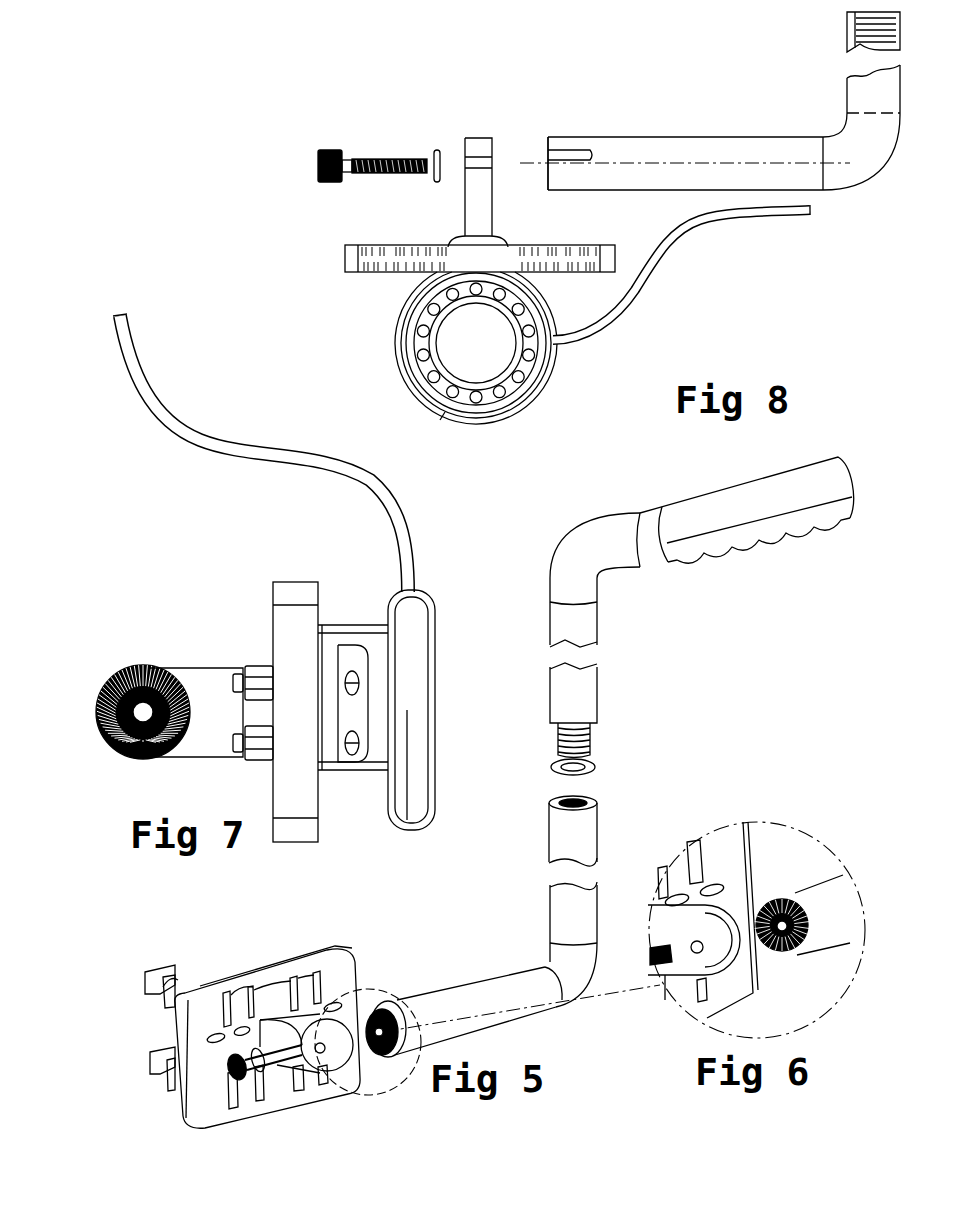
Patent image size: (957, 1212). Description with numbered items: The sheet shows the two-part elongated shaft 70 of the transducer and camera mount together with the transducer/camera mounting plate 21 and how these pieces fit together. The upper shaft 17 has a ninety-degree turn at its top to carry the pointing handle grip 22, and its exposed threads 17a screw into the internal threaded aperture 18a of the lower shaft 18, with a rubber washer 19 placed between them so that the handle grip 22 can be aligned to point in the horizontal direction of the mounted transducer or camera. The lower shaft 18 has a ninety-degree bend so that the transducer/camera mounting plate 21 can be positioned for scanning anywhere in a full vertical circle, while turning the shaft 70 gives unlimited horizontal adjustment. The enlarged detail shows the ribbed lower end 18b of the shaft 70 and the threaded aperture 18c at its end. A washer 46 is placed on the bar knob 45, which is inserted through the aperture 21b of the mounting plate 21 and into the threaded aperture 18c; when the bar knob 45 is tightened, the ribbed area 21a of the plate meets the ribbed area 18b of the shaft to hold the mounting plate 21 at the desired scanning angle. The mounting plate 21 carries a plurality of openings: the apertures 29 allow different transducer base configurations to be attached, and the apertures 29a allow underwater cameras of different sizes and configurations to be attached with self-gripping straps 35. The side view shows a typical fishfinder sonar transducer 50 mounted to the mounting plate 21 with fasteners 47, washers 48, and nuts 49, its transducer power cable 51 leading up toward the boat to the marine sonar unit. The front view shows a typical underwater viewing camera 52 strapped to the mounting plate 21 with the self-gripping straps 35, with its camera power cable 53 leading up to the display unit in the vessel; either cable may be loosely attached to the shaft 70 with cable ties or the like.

In FIG. 5, the upper shaft 17 is at (547, 632).
In FIG. 5, the exposed threads 17a is at (557, 738).
In FIG. 8, the lower shaft 18 is at (847, 32).
In FIG. 5, the lower shaft 18 is at (486, 974).
In FIG. 5, the internal threaded aperture 18a is at (559, 798).
In FIG. 8, the ribbed lower end of shaft 18b is at (545, 137).
In FIG. 6, the ribbed lower end of shaft 18b is at (778, 895).
In FIG. 8, the threaded aperture 18c is at (577, 152).
In FIG. 6, the threaded aperture 18c is at (799, 957).
In FIG. 5, the rubber washer 19 is at (604, 761).
In FIG. 8, the transducer/camera mounting plate 21 is at (378, 274).
In FIG. 7, the transducer/camera mounting plate 21 is at (298, 602).
In FIG. 5, the transducer/camera mounting plate 21 is at (276, 951).
In FIG. 8, the ribbed area 21a is at (497, 188).
In FIG. 7, the ribbed area 21a is at (141, 759).
In FIG. 8, the aperture 21b is at (473, 157).
In FIG. 7, the aperture 21b is at (132, 668).
In FIG. 5, the handle grip 22 is at (742, 549).
In FIG. 5, the apertures 29 is at (206, 1039).
In FIG. 8, the apertures 29a is at (590, 258).
In FIG. 5, the apertures 29a is at (317, 973).
In FIG. 8, the self-gripping straps 35 is at (400, 348).
In FIG. 5, the self-gripping straps 35 is at (159, 968).
In FIG. 8, the bar knob 45 is at (316, 182).
In FIG. 5, the bar knob 45 is at (233, 1069).
In FIG. 8, the washer 46 is at (436, 183).
In FIG. 5, the washer 46 is at (270, 1074).
In FIG. 7, the fasteners 47 is at (233, 674).
In FIG. 7, the washers 48 is at (262, 655).
In FIG. 7, the nuts 49 is at (243, 652).
In FIG. 7, the transducer 50 is at (389, 824).
In FIG. 7, the transducer power cable 51 is at (330, 476).
In FIG. 8, the underwater viewing camera 52 is at (502, 376).
In FIG. 8, the camera power cable 53 is at (673, 235).
In FIG. 5, the shaft 70 is at (614, 680).